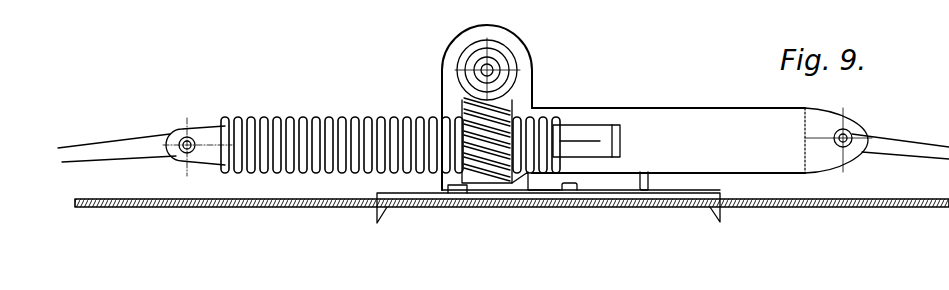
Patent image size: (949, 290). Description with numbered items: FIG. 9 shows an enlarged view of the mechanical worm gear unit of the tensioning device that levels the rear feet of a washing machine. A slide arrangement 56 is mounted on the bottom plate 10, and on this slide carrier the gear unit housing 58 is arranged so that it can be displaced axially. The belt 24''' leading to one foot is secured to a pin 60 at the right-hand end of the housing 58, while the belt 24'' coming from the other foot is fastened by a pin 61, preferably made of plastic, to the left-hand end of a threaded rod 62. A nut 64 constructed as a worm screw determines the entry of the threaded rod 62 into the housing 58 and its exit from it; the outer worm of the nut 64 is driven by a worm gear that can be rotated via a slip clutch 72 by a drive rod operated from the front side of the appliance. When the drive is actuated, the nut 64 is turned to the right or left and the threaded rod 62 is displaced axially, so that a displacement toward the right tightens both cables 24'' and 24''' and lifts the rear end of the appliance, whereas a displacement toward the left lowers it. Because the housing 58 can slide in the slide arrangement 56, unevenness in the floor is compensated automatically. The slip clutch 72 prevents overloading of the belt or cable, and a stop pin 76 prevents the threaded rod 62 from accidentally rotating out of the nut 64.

The bottom plate 10 is at (291, 207).
The slide arrangement 56 is at (599, 205).
The belt 24'' is at (117, 126).
The belt 24''' is at (900, 125).
The pin 61 is at (192, 128).
The pin 60 is at (848, 125).
The threaded rod 62 is at (302, 117).
The nut 64 is at (522, 100).
The slip clutch 72 is at (515, 42).
The gear unit housing 58 is at (587, 108).
The stop pin 76 is at (582, 106).